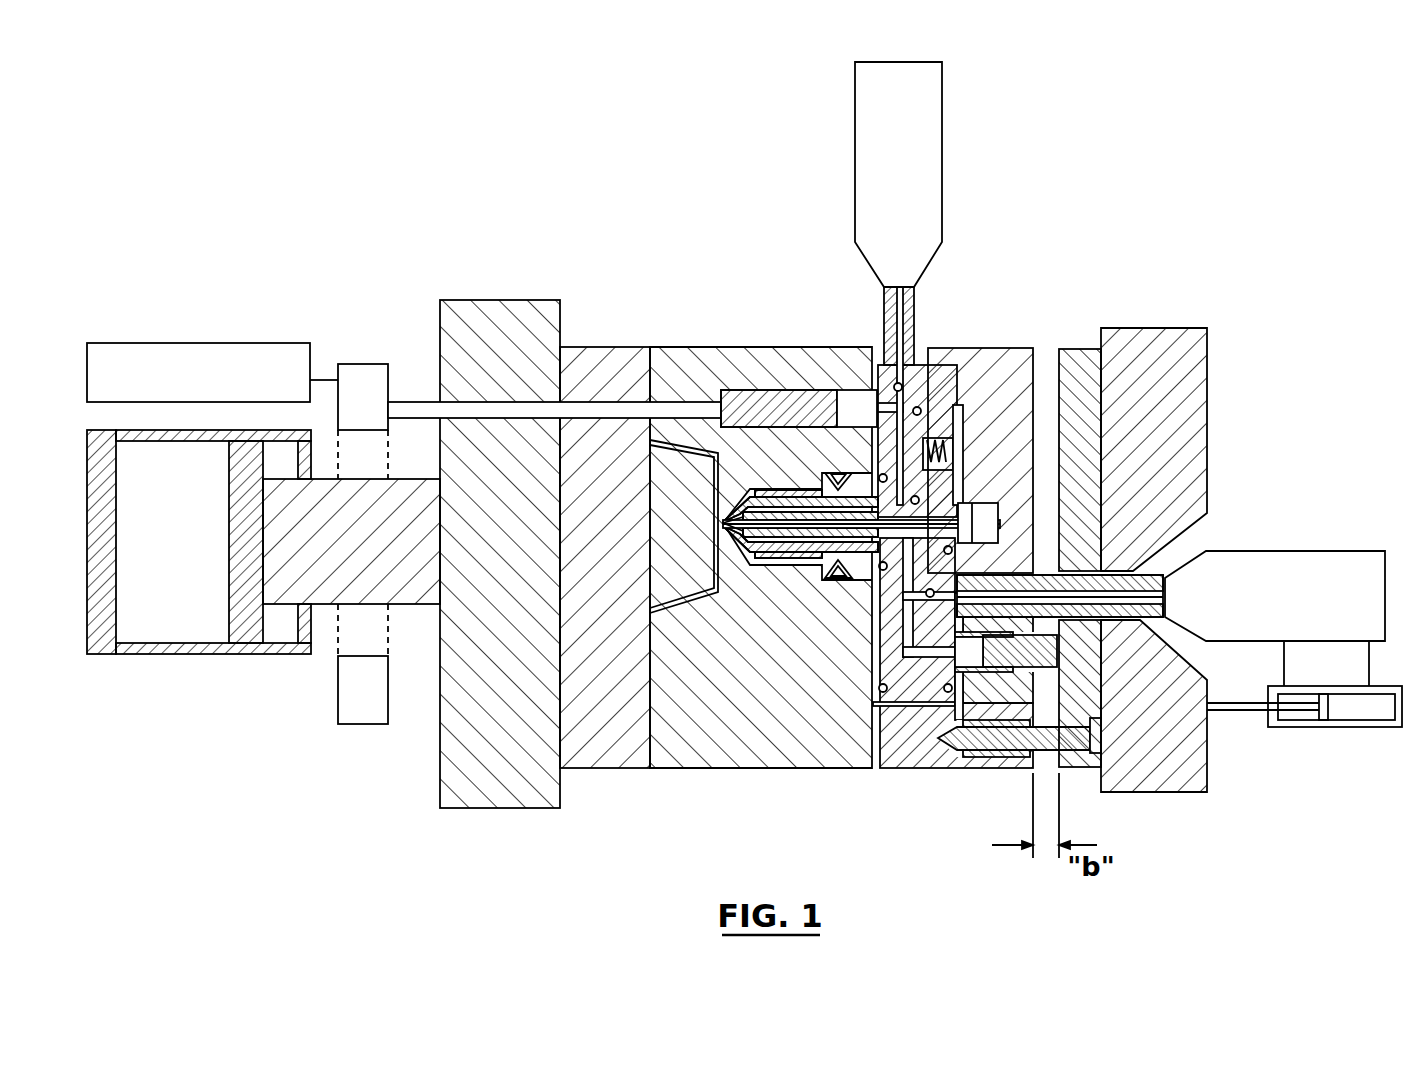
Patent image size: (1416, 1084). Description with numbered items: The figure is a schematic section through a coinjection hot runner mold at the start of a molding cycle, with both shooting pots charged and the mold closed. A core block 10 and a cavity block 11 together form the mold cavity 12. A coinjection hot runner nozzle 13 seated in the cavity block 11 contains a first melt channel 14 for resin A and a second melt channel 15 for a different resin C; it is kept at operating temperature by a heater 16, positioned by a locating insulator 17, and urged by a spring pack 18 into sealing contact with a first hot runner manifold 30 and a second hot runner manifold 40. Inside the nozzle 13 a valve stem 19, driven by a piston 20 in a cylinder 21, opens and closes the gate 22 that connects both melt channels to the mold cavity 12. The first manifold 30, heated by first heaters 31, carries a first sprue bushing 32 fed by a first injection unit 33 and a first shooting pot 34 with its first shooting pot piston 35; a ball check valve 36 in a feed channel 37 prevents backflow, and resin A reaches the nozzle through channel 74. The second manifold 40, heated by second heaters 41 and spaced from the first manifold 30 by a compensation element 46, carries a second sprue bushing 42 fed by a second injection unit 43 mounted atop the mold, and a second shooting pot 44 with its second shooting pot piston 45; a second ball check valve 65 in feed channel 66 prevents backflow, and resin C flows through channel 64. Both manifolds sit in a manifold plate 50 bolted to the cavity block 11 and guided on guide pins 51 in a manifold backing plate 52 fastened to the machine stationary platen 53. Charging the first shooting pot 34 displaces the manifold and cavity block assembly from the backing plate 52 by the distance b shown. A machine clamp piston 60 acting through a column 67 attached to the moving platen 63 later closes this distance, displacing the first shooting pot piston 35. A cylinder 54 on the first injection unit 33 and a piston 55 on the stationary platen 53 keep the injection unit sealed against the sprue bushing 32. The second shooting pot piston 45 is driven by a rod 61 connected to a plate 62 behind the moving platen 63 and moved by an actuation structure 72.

The core block 10 is at (582, 365).
The cavity block 11 is at (663, 370).
The mold cavity 12 is at (720, 440).
The coinjection hot runner nozzle 13 is at (735, 560).
The first melt channel 14 is at (775, 565).
The second melt channel 15 is at (857, 557).
The heater 16 is at (800, 560).
The locating insulator 17 is at (845, 580).
The spring pack 18 is at (835, 590).
The valve stem 19 is at (762, 410).
The piston 20 is at (1000, 515).
The cylinder 21 is at (1003, 527).
The gate 22 is at (723, 524).
The first hot runner manifold 30 is at (1005, 582).
The first heaters 31 is at (850, 670).
The first sprue bushing 32 is at (1150, 618).
The first injection unit 33 is at (1358, 567).
The first shooting pot 34 is at (975, 660).
The first shooting pot piston 35 is at (1020, 740).
The ball check valve 36 is at (897, 637).
The feed channel 37 is at (930, 690).
The second hot runner manifold 40 is at (925, 418).
The second heaters 41 is at (958, 349).
The second sprue bushing 42 is at (915, 327).
The second injection unit 43 is at (926, 120).
The second shooting pot 44 is at (884, 385).
The second shooting pot piston 45 is at (810, 510).
The compensation element 46 is at (943, 447).
The manifold plate 50 is at (1022, 416).
The guide pins 51 is at (1075, 742).
The manifold backing plate 52 is at (1048, 490).
The machine stationary platen 53 is at (1159, 357).
The cylinder 54 is at (1377, 727).
The piston 55 is at (1321, 716).
The machine clamp piston 60 is at (248, 613).
The rod 61 is at (480, 410).
The plate 62 is at (352, 382).
The moving platen 63 is at (455, 322).
The channel 64 is at (932, 375).
The second ball check valve 65 is at (855, 405).
The feed channel 66 is at (908, 303).
The column 67 is at (352, 584).
The actuation structure 72 is at (237, 343).
The channel 74 is at (870, 600).